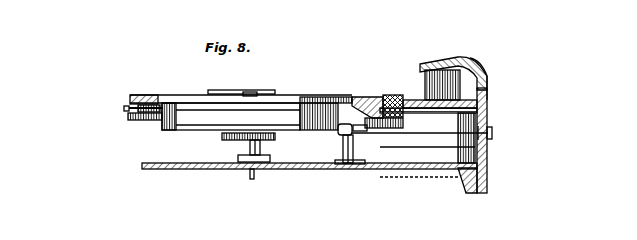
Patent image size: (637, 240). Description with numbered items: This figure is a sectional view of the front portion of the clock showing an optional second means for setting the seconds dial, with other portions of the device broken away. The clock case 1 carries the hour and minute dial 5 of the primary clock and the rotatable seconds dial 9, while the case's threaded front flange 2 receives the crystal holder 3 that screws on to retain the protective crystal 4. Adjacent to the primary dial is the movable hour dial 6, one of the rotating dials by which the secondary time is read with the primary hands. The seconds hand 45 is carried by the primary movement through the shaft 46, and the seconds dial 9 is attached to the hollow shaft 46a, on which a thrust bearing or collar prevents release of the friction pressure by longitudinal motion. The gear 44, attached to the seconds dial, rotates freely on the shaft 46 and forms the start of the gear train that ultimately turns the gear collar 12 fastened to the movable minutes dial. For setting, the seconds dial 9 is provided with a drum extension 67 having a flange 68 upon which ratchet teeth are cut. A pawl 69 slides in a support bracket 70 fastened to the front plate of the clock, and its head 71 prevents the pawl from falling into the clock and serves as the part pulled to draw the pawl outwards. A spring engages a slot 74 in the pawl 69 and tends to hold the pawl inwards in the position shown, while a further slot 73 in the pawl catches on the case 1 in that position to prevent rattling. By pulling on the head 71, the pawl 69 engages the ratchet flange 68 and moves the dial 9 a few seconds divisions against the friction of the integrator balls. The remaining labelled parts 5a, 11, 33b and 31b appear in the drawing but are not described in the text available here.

The clock case 1 is at (487, 172).
The threaded front flange 2 is at (488, 87).
The crystal holder 3 is at (479, 67).
The protective crystal 4 is at (437, 63).
The hour and minute dial 5 is at (422, 99).
The plate support block 5a is at (143, 95).
The movable hour dial 6 is at (393, 97).
The seconds dial 9 is at (299, 97).
The bushing 11 is at (130, 121).
The gear collar 12 is at (128, 109).
The gear 44 is at (210, 170).
The seconds hand 45 is at (235, 91).
The shaft 46 is at (250, 92).
The hollow shaft 46a is at (248, 141).
The drum extension 67 is at (205, 118).
The flange 68 is at (160, 128).
The pawl 69 is at (318, 131).
The support bracket 70 is at (348, 166).
The head 71 is at (494, 131).
The slot 73 is at (489, 140).
The slot 74 is at (397, 117).
The lower member 33b is at (295, 235).
The lower member 31b is at (340, 235).